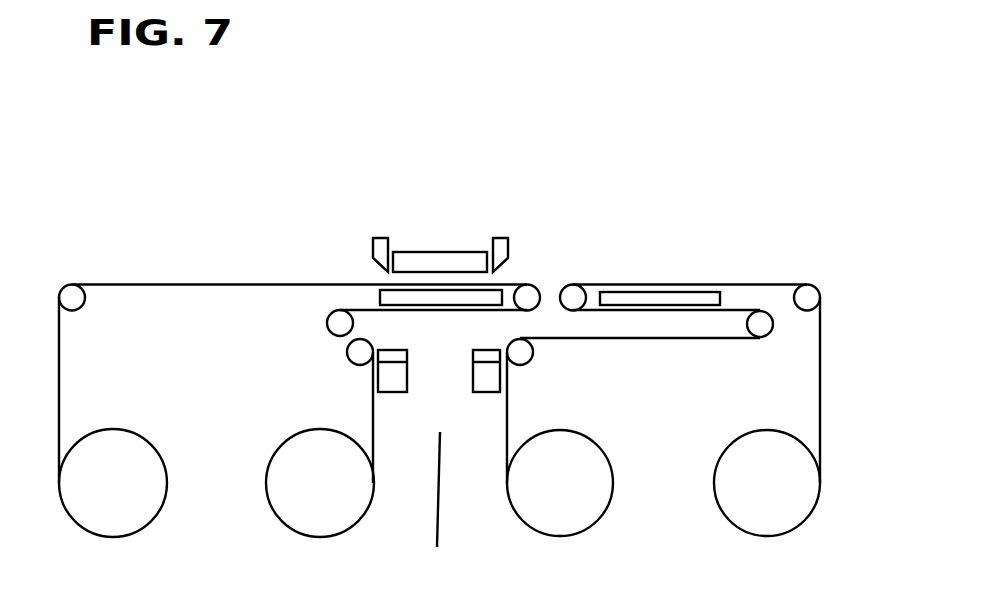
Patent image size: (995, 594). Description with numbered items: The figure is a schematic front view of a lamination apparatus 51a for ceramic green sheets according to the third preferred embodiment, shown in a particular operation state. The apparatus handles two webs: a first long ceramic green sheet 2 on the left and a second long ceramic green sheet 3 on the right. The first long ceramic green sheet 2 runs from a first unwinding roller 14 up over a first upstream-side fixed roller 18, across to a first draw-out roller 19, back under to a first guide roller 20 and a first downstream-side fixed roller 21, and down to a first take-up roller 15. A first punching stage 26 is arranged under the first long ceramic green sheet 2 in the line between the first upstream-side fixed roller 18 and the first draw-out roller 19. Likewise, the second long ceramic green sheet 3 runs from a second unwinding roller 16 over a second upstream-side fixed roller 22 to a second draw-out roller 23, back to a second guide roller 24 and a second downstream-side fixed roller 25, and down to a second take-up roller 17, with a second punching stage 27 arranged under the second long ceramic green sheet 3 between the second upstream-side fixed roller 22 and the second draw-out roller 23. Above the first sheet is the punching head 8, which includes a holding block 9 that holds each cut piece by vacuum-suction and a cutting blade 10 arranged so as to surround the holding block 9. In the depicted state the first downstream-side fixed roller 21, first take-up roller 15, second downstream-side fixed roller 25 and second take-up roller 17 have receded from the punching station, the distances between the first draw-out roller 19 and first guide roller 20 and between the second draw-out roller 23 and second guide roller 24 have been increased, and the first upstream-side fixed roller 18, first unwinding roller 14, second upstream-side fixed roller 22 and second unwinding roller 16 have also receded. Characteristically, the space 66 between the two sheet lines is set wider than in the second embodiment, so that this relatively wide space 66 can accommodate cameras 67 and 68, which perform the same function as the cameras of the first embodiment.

The lamination apparatus 51a is at (127, 168).
The first long ceramic green sheet 2 is at (133, 284).
The second long ceramic green sheet 3 is at (657, 283).
The punching head 8 is at (422, 240).
The holding block 9 is at (465, 258).
The cutting blade 10 is at (383, 240).
The first unwinding roller 14 is at (135, 517).
The first take-up roller 15 is at (287, 455).
The second unwinding roller 16 is at (733, 463).
The second take-up roller 17 is at (593, 513).
The first upstream-side fixed roller 18 is at (70, 285).
The first draw-out roller 19 is at (530, 292).
The first guide roller 20 is at (327, 324).
The first downstream-side fixed roller 21 is at (350, 355).
The second upstream-side fixed roller 22 is at (812, 290).
The second draw-out roller 23 is at (575, 290).
The second guide roller 24 is at (760, 328).
The second downstream-side fixed roller 25 is at (538, 360).
The first punching stage 26 is at (378, 293).
The second punching stage 27 is at (708, 292).
The space 66 is at (442, 506).
The camera 67 is at (397, 380).
The camera 68 is at (484, 380).